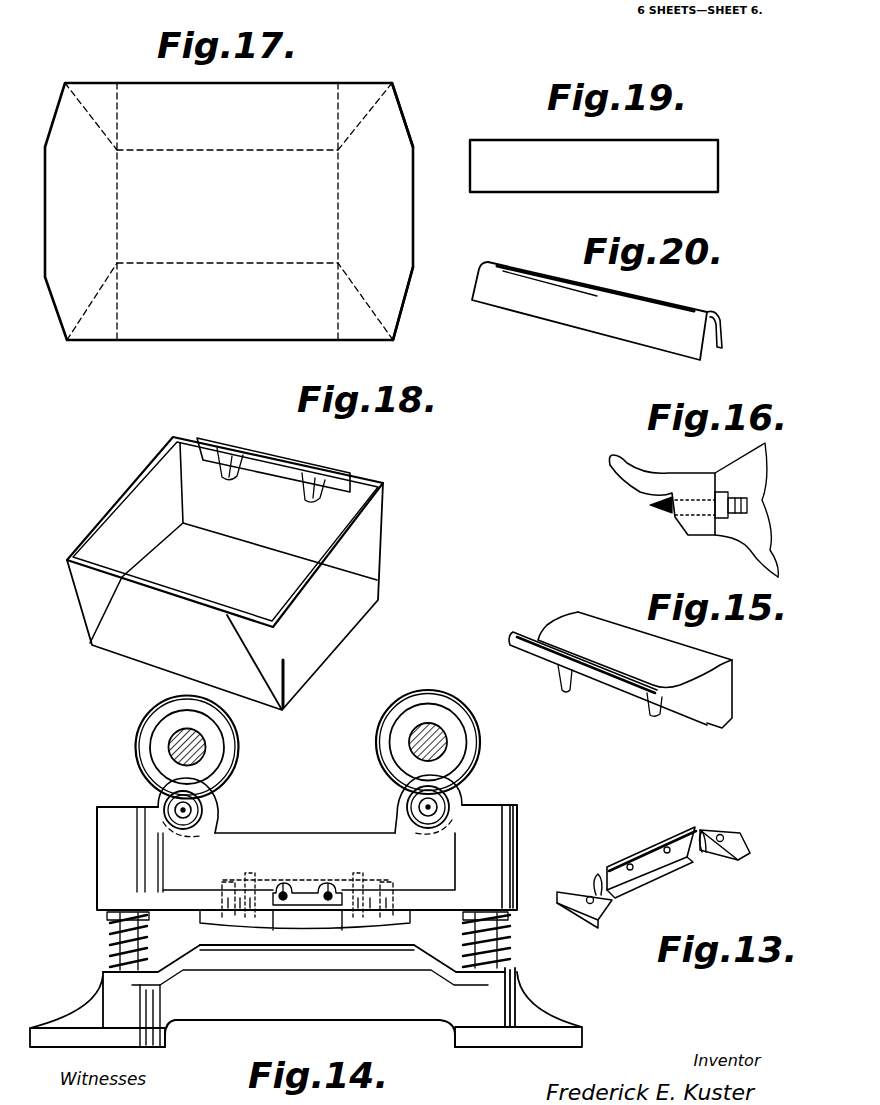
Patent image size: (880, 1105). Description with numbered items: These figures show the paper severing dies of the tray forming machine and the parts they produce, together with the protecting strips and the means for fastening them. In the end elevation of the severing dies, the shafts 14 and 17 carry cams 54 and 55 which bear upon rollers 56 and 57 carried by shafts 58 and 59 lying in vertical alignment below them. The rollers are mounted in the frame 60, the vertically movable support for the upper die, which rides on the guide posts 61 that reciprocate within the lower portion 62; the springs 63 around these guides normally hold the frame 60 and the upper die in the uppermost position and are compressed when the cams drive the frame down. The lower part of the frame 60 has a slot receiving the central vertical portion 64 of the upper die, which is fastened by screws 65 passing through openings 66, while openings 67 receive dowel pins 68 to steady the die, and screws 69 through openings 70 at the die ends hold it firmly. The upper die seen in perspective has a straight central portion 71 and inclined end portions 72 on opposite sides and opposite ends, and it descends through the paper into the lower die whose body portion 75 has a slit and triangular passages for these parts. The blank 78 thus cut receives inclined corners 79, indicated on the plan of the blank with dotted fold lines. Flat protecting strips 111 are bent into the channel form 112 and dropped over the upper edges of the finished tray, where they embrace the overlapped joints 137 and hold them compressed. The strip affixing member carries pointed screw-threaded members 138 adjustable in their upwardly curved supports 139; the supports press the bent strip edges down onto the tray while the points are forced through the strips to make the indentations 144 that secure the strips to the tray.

In FIG. 17, the blank 78 is at (229, 211).
In FIG. 14, the blank 78 is at (323, 952).
In FIG. 17, the inclined corners 79 is at (403, 115).
In FIG. 19, the protecting strip 111 is at (594, 166).
In FIG. 20, the bent protecting strip 112 is at (582, 328).
In FIG. 18, the bent protecting strip 112 is at (267, 462).
In FIG. 18, the overlapped joints 137 is at (190, 438).
In FIG. 18, the indentations 144 is at (273, 483).
In FIG. 16, the support 139 is at (650, 472).
In FIG. 15, the support 139 is at (620, 670).
In FIG. 16, the pointed screw-threaded members 138 is at (663, 512).
In FIG. 15, the pointed screw-threaded members 138 is at (598, 685).
In FIG. 14, the shaft 17 is at (166, 748).
In FIG. 14, the cam 55 is at (229, 745).
In FIG. 14, the cam 54 is at (428, 700).
In FIG. 14, the shaft 14 is at (445, 733).
In FIG. 14, the roller 57 is at (208, 803).
In FIG. 14, the roller 56 is at (446, 796).
In FIG. 14, the shaft 59 is at (193, 815).
In FIG. 14, the shaft 58 is at (418, 807).
In FIG. 14, the frame 60 is at (113, 858).
In FIG. 14, the guide posts 61 is at (110, 923).
In FIG. 14, the lower portion 62 is at (113, 1003).
In FIG. 14, the springs 63 is at (148, 936).
In FIG. 14, the central vertical portion 64 is at (313, 880).
In FIG. 13, the central vertical portion 64 is at (651, 855).
In FIG. 14, the screws 65 is at (282, 884).
In FIG. 13, the openings 66 is at (633, 869).
In FIG. 13, the openings 67 is at (603, 868).
In FIG. 14, the dowel pins 68 is at (318, 879).
In FIG. 14, the screws 69 is at (319, 884).
In FIG. 13, the openings 70 is at (735, 836).
In FIG. 13, the straight central portion 71 is at (628, 887).
In FIG. 13, the inclined end portions 72 is at (713, 828).
In FIG. 14, the body portion 75 is at (272, 951).